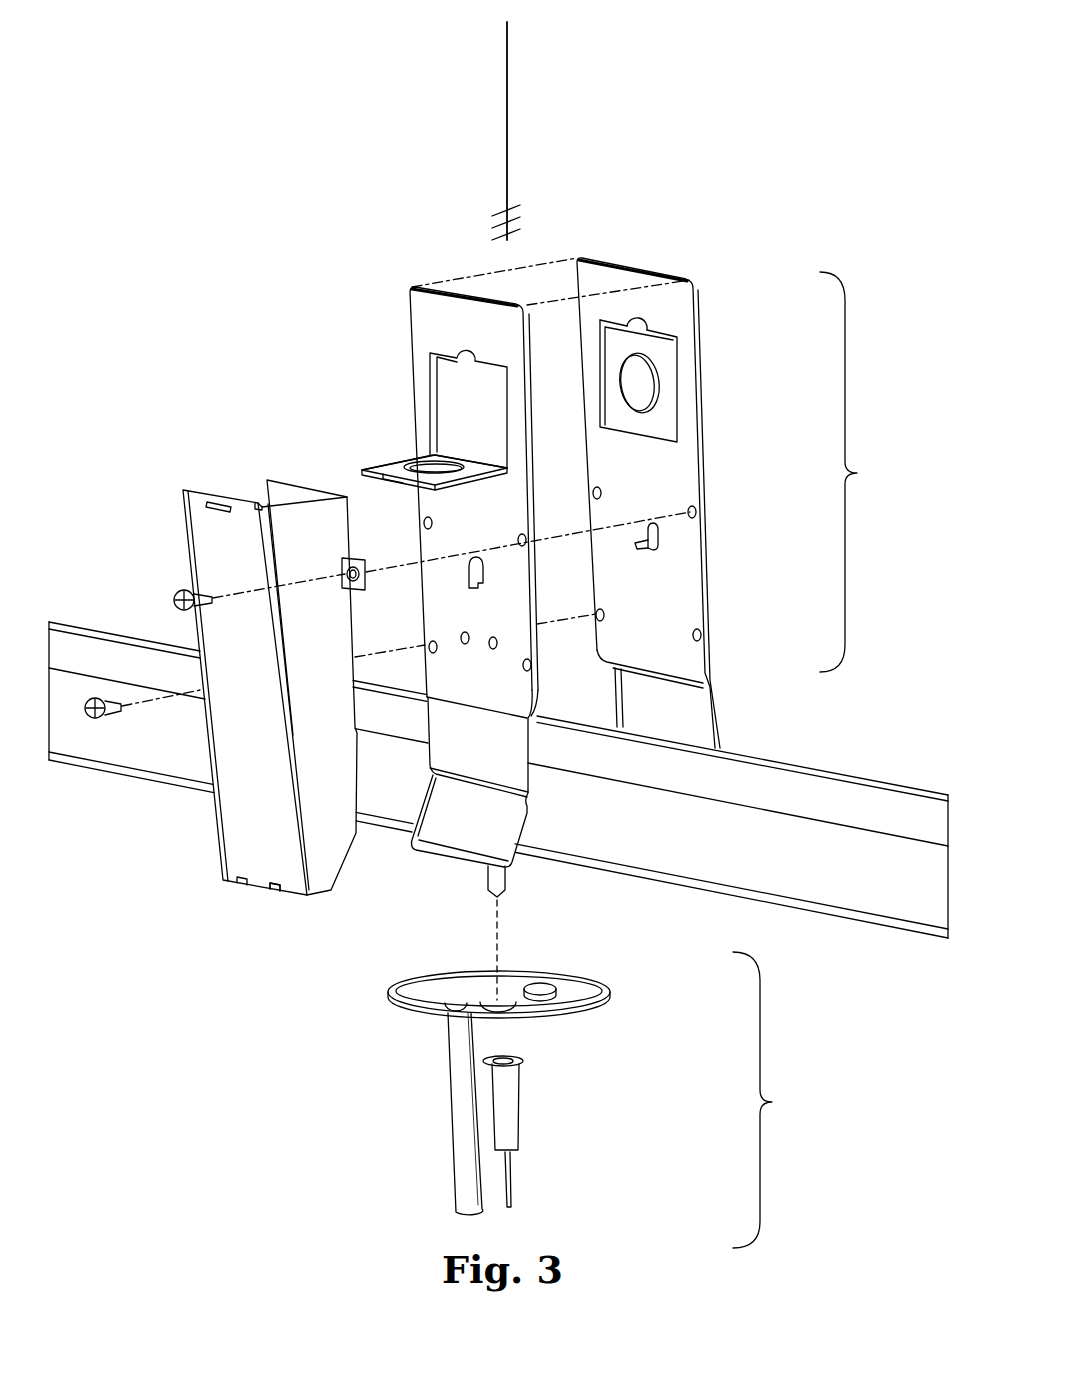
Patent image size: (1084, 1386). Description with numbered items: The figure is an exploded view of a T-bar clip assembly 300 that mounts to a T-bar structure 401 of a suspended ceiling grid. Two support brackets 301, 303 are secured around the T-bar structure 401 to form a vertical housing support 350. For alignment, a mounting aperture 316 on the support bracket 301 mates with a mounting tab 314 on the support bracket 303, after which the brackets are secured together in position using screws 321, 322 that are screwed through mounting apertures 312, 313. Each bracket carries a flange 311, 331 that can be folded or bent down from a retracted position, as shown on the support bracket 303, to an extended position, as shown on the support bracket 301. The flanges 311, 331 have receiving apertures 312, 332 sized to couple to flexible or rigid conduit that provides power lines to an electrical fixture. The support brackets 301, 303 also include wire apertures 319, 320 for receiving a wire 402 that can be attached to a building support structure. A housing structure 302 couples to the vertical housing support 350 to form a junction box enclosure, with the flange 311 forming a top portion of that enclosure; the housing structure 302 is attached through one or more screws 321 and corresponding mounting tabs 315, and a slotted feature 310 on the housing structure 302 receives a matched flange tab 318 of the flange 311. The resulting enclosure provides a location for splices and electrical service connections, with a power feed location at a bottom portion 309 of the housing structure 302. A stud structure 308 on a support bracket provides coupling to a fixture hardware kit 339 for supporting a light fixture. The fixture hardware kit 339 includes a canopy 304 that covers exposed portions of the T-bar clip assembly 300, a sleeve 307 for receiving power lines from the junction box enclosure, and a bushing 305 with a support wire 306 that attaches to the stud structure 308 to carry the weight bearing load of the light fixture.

The T-bar clip assembly 300 is at (236, 200).
The support bracket 301 is at (418, 297).
The housing structure 302 is at (200, 534).
The support bracket 303 is at (678, 315).
The canopy 304 is at (609, 989).
The bushing 305 is at (509, 1108).
The support wire 306 is at (514, 1187).
The sleeve 307 is at (462, 1099).
The stud structure 308 is at (492, 899).
The bottom portion 309 is at (275, 893).
The slotted feature 310 is at (224, 503).
The flange 311 is at (414, 450).
The receiving aperture 312 is at (407, 465).
The mounting aperture 313 is at (695, 514).
The mounting tab 314 is at (652, 551).
The mounting tab 315 is at (357, 563).
The mounting aperture 316 is at (470, 590).
The flange tab 318 is at (401, 471).
The wire aperture 319 is at (464, 344).
The wire aperture 320 is at (637, 312).
The screw 321 is at (176, 601).
The screw 322 is at (86, 715).
The flange 331 is at (665, 430).
The receiving aperture 332 is at (657, 370).
The fixture hardware kit 339 is at (777, 1100).
The vertical housing support 350 is at (863, 472).
The T-bar structure 401 is at (875, 796).
The wire 402 is at (509, 96).